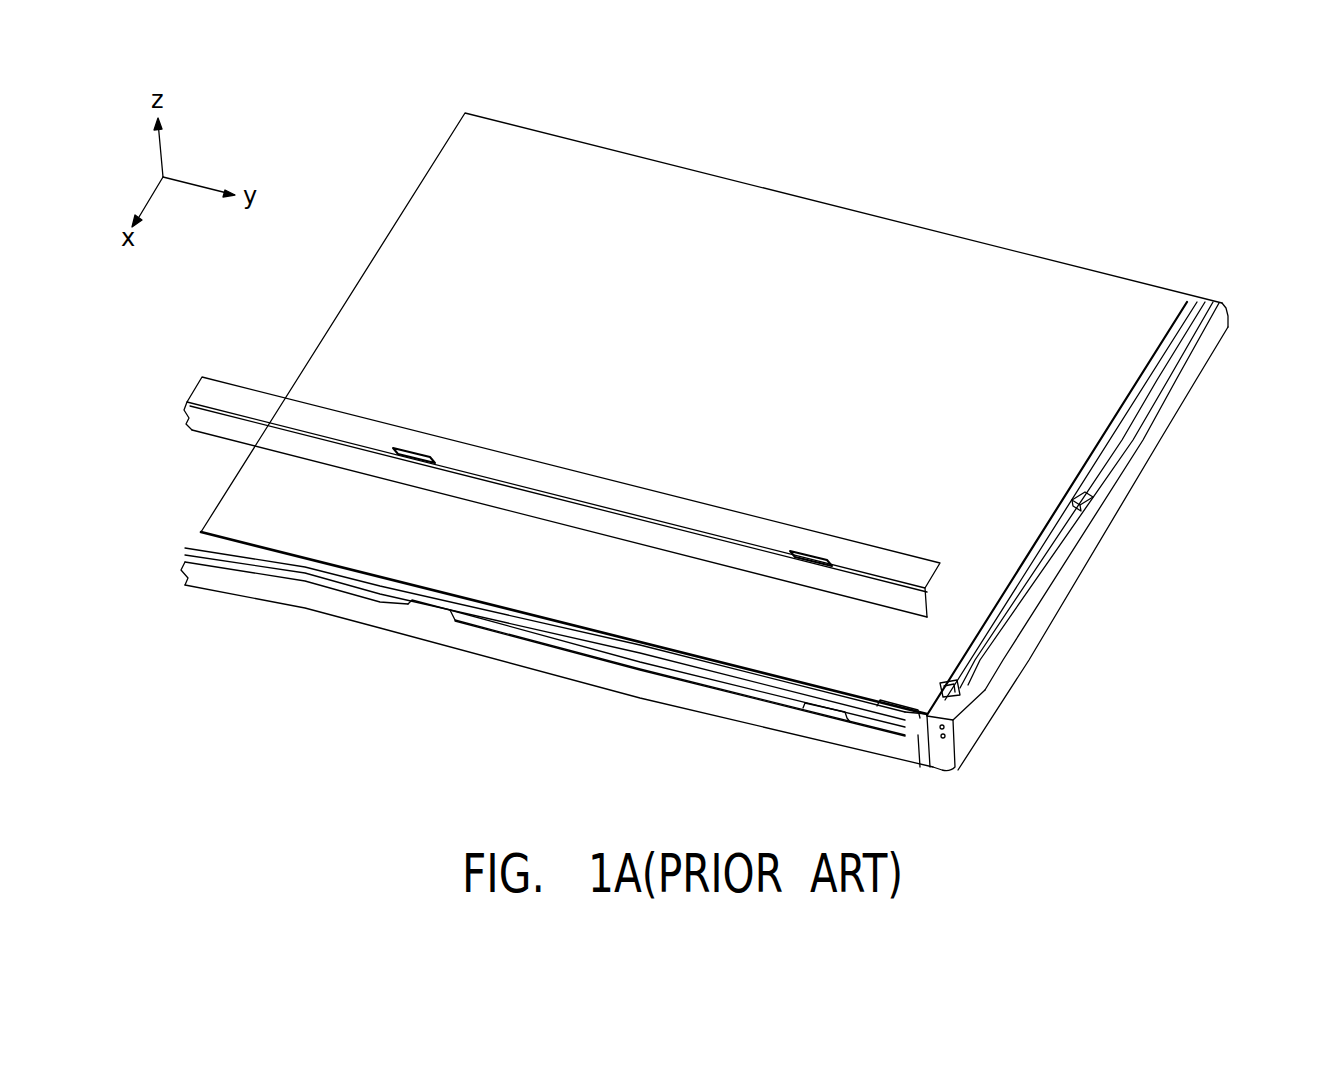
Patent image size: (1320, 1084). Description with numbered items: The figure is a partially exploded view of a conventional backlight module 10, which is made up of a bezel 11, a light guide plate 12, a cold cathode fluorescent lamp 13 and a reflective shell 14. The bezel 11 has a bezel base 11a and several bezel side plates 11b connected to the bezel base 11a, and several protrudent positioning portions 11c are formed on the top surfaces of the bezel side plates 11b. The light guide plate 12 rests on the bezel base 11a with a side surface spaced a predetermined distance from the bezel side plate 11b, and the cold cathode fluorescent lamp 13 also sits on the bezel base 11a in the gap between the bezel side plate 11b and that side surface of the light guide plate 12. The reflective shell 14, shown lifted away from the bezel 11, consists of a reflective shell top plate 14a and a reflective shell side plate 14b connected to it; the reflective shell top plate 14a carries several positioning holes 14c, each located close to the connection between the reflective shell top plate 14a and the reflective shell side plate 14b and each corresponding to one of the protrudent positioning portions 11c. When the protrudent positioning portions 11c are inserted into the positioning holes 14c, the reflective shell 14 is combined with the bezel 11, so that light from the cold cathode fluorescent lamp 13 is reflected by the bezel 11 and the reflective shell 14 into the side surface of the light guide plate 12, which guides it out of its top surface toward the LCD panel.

The backlight module 10 is at (1230, 191).
The bezel 11 is at (704, 565).
The bezel base 11a is at (935, 758).
The bezel side plate 11b is at (1128, 473).
The protrudent positioning portion 11c is at (434, 617).
The light guide plate 12 is at (982, 508).
The cold cathode fluorescent lamp 13 is at (723, 683).
The reflective shell 14 is at (562, 481).
The reflective shell top plate 14a is at (493, 461).
The reflective shell side plate 14b is at (576, 521).
The positioning hole 14c is at (412, 457).